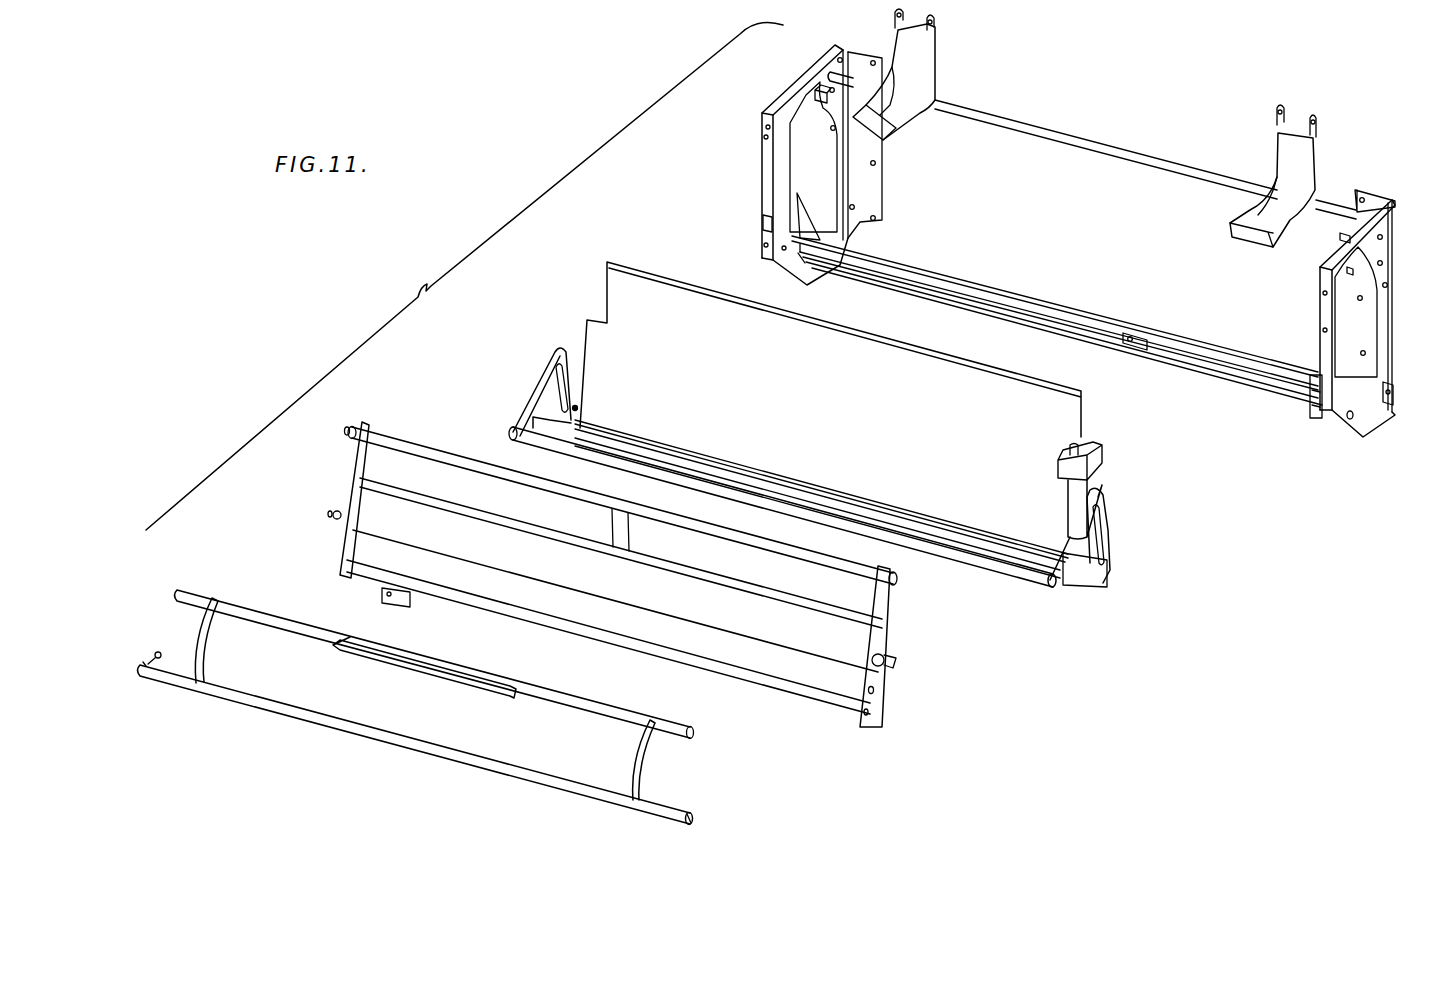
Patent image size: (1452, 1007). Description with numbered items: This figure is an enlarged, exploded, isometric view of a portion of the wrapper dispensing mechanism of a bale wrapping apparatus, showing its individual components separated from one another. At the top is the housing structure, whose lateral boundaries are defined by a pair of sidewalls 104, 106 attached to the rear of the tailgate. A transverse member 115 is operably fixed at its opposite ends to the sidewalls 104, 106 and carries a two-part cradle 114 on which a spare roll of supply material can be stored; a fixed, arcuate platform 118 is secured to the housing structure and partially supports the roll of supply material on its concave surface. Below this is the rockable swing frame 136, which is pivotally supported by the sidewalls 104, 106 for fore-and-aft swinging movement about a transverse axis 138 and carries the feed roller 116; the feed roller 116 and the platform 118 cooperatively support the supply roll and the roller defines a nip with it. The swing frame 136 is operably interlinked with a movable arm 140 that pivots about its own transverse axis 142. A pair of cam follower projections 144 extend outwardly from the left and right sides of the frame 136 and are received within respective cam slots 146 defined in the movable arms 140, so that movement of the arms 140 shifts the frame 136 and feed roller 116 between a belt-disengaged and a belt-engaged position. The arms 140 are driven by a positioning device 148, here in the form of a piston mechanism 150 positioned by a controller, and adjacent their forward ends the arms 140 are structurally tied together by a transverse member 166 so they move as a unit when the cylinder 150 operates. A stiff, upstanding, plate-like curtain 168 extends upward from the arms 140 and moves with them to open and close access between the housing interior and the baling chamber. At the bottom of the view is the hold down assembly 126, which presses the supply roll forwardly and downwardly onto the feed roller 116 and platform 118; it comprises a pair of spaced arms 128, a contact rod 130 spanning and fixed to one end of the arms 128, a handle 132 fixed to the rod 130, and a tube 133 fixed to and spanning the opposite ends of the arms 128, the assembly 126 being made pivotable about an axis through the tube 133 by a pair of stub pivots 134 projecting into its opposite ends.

The sidewall 104 is at (800, 100).
The sidewall 106 is at (1387, 247).
The two-part cradle 114 is at (918, 52).
The transverse member 115 is at (1118, 150).
The feed roller 116 is at (628, 617).
The platform 118 is at (905, 258).
The hold down assembly 126 is at (476, 716).
The spaced arms 128 is at (200, 647).
The contact rod 130 is at (540, 690).
The handle 132 is at (427, 677).
The tube 133 is at (393, 737).
The stub pivots 134 is at (695, 815).
The swing frame 136 is at (362, 462).
The transverse axis 138 is at (897, 573).
The movable arm 140 is at (546, 388).
The transverse axis 142 is at (1058, 582).
The cam follower projections 144 is at (333, 518).
The cam slots 146 is at (562, 380).
The positioning device 148 is at (1104, 433).
The piston mechanism 150 is at (1073, 500).
The transverse member 166 is at (845, 497).
The curtain 168 is at (673, 290).